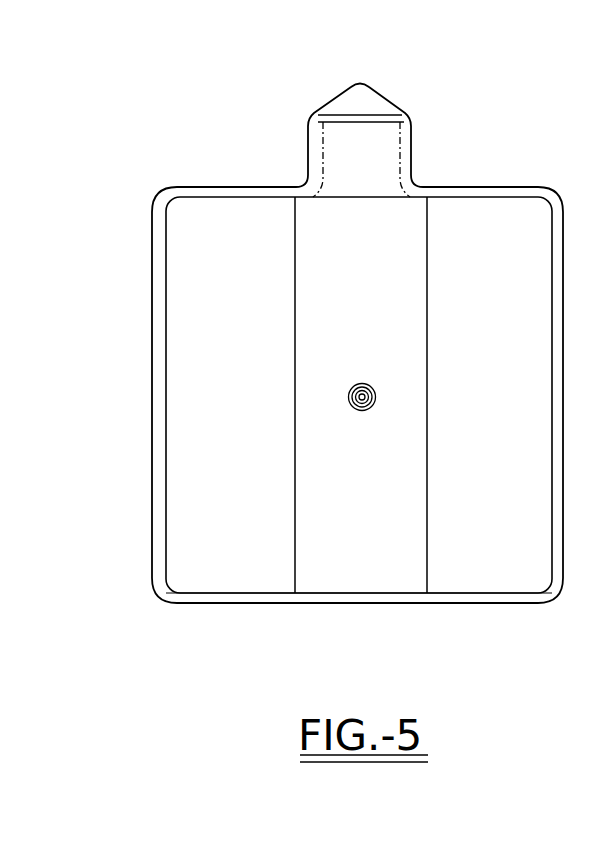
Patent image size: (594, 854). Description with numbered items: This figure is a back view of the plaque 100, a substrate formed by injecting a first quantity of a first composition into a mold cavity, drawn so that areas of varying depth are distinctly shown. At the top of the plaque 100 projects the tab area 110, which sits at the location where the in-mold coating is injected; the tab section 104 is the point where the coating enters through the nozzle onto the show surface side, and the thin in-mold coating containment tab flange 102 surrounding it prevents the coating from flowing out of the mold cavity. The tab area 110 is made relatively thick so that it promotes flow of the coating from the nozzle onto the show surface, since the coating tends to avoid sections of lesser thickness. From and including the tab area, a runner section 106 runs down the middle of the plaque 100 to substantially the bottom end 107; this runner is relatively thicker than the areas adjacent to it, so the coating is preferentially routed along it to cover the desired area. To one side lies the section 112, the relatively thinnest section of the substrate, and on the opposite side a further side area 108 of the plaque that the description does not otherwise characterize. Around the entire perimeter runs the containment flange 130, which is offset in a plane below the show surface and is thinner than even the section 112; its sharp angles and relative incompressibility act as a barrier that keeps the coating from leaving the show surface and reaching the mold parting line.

The plaque 100 is at (236, 176).
The in-mold coating containment tab flange 102 is at (413, 133).
The tab section 104 is at (357, 98).
The runner section 106 is at (366, 572).
The bottom end 107 is at (400, 594).
The left side panel 108 is at (237, 572).
The tab area 110 is at (392, 166).
The section 112 is at (488, 572).
The containment flange 130 is at (157, 288).